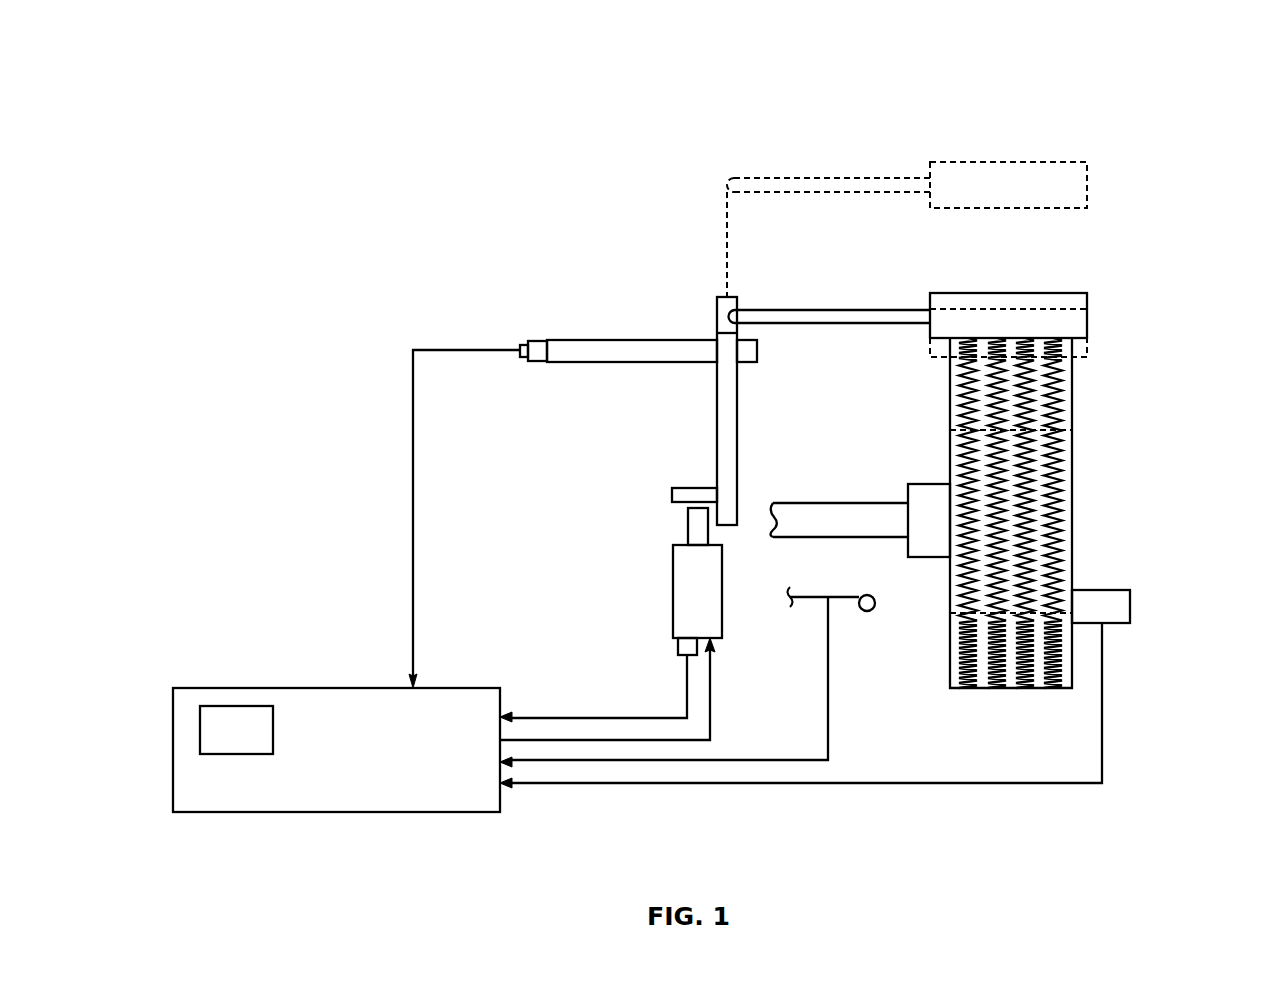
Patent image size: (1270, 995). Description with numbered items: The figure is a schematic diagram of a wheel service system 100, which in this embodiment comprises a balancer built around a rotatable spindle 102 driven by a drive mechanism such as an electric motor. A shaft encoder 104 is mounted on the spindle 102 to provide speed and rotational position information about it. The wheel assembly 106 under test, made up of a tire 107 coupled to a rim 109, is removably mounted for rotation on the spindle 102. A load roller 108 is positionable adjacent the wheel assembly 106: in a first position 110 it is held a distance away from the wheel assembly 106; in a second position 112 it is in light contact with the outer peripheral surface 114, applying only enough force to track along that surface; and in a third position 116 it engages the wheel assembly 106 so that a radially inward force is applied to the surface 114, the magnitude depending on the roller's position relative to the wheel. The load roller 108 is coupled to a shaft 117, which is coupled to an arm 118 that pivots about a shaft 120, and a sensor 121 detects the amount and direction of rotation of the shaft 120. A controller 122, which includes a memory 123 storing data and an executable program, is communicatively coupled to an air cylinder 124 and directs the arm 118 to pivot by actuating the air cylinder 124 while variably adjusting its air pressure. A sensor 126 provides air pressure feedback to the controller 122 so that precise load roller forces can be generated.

The wheel service system 100 is at (196, 93).
The spindle 102 is at (840, 500).
The shaft encoder 104 is at (930, 558).
The wheel assembly 106 is at (1072, 548).
The tire 107 is at (1072, 690).
The load roller 108 is at (1005, 162).
The rim 109 is at (1073, 515).
The first position 110 is at (1117, 182).
The second position 112 is at (1107, 300).
The outer peripheral surface 114 is at (1020, 690).
The third position 116 is at (840, 178).
The shaft 117 is at (830, 310).
The arm 118 is at (737, 428).
The shaft 120 is at (610, 340).
The sensor 121 is at (525, 342).
The controller 122 is at (243, 815).
The memory 123 is at (237, 725).
The air cylinder 124 is at (673, 593).
The sensor 126 is at (678, 650).